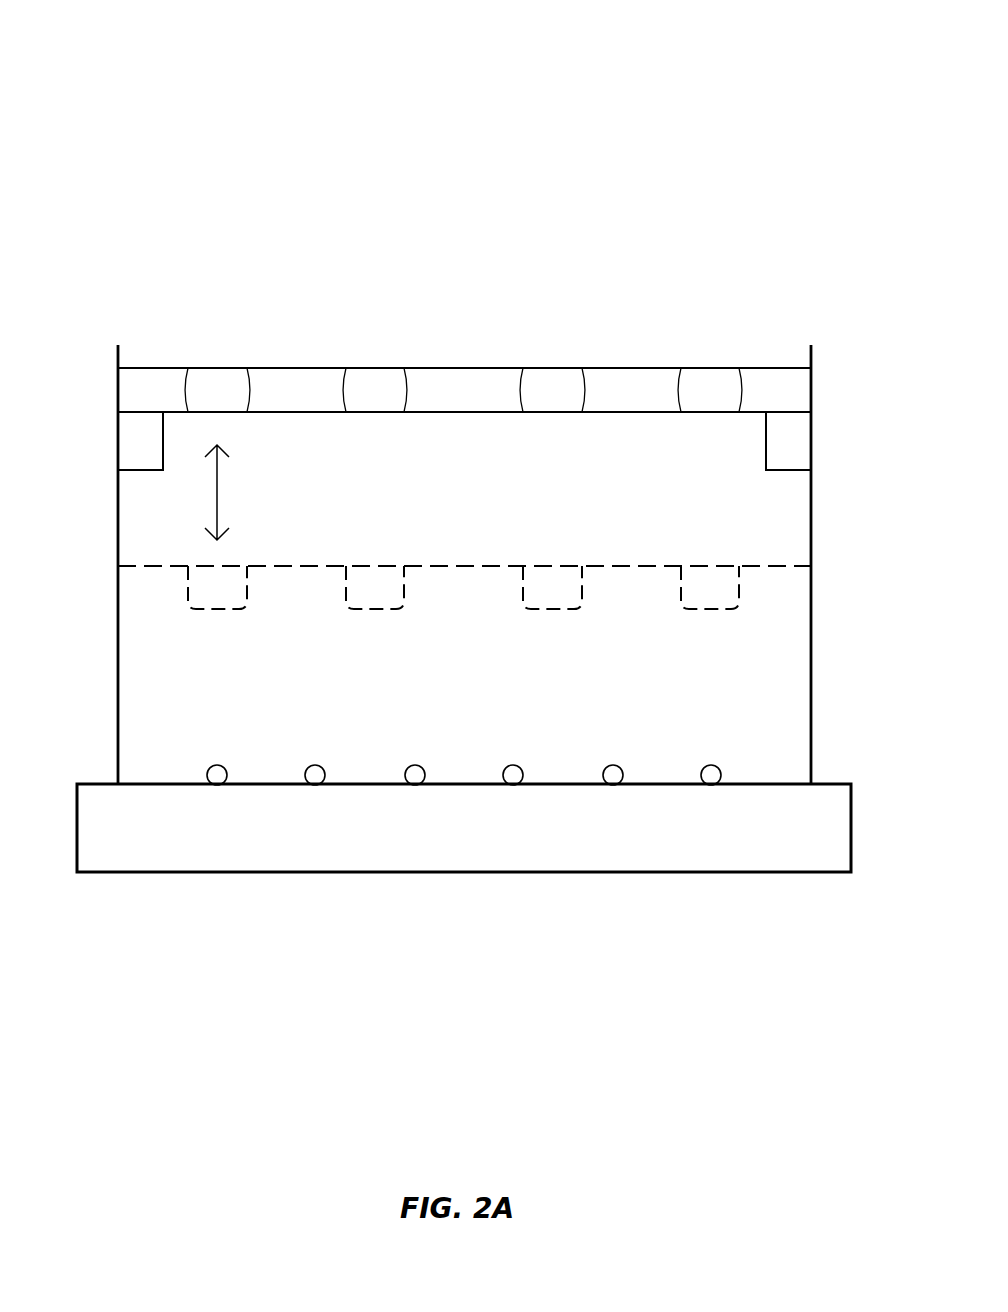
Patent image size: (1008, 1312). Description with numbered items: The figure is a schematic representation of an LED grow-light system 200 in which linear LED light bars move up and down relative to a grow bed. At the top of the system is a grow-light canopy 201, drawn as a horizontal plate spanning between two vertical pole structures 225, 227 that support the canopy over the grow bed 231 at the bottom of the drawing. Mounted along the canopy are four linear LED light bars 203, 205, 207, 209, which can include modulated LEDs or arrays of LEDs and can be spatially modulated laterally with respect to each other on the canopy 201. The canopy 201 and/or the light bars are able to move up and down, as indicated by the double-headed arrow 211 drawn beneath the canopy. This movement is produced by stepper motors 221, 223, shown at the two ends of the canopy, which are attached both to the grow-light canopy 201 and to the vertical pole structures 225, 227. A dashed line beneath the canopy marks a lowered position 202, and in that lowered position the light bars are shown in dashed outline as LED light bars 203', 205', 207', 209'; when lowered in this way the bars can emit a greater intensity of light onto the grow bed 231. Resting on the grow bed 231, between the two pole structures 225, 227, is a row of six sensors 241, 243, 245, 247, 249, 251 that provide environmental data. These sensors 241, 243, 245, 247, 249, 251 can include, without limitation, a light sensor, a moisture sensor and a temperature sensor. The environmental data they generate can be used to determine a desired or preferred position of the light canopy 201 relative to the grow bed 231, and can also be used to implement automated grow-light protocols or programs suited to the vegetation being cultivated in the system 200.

The LED grow-light system 200 is at (148, 50).
The grow-light canopy 201 is at (485, 368).
The lowered position 202 is at (790, 563).
The linear LED light bar 203 is at (260, 361).
The linear LED light bar 205 is at (419, 361).
The linear LED light bar 207 is at (607, 361).
The linear LED light bar 209 is at (749, 361).
The LED light bar in lowered position 203' is at (238, 612).
The LED light bar in lowered position 205' is at (397, 612).
The LED light bar in lowered position 207' is at (574, 612).
The LED light bar in lowered position 209' is at (732, 612).
The arrow 211 is at (218, 482).
The stepper motor 221 is at (786, 447).
The stepper motor 223 is at (118, 442).
The vertical pole structure 225 is at (811, 681).
The vertical pole structure 227 is at (118, 716).
The grow bed 231 is at (833, 784).
The sensor 241 is at (217, 765).
The sensor 243 is at (315, 765).
The sensor 245 is at (415, 765).
The sensor 247 is at (513, 765).
The sensor 249 is at (613, 765).
The sensor 251 is at (711, 765).